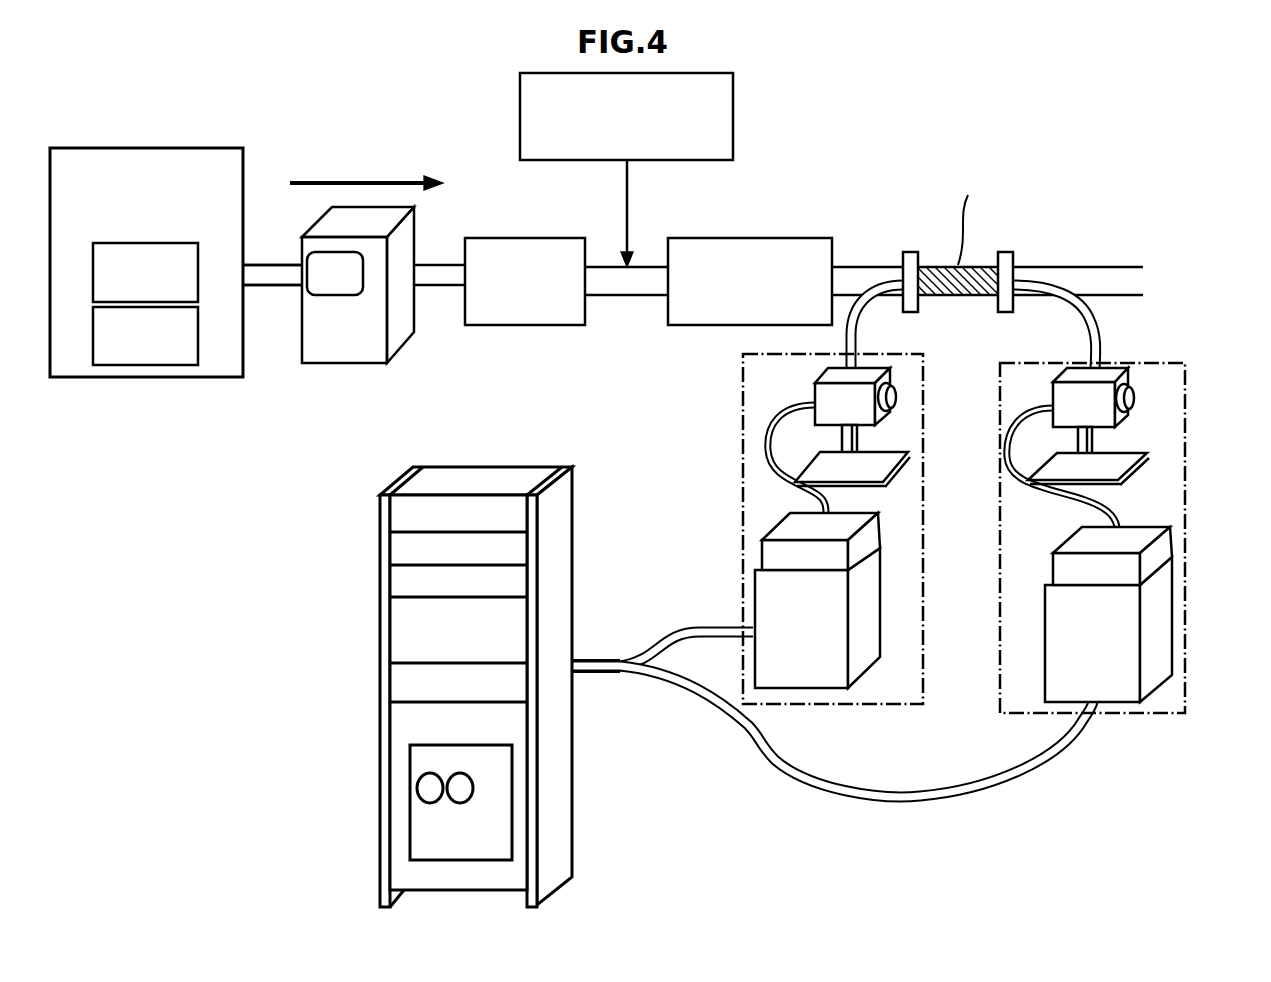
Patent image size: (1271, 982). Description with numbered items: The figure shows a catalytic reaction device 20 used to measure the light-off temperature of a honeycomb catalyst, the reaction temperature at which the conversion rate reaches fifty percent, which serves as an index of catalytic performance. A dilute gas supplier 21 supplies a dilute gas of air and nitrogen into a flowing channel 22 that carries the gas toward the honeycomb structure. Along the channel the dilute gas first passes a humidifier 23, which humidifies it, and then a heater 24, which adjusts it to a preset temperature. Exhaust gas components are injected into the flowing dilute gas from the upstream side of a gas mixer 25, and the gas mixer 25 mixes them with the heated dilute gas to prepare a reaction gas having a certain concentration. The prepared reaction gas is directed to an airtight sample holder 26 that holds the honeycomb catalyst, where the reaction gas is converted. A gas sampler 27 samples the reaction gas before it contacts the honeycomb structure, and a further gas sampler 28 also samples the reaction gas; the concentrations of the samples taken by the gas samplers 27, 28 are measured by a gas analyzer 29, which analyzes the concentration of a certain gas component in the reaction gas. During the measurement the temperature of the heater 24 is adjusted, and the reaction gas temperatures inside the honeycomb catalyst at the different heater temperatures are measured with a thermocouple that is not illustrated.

The catalytic reaction device 20 is at (805, 96).
The dilute gas supplier 21 is at (148, 377).
The flowing channel 22 is at (263, 285).
The humidifier 23 is at (347, 363).
The heater 24 is at (527, 325).
The gas mixer 25 is at (692, 325).
The sample holder 26 is at (908, 252).
The gas sampler 27 is at (741, 494).
The gas sampler 28 is at (1153, 714).
The gas analyzer 29 is at (572, 822).